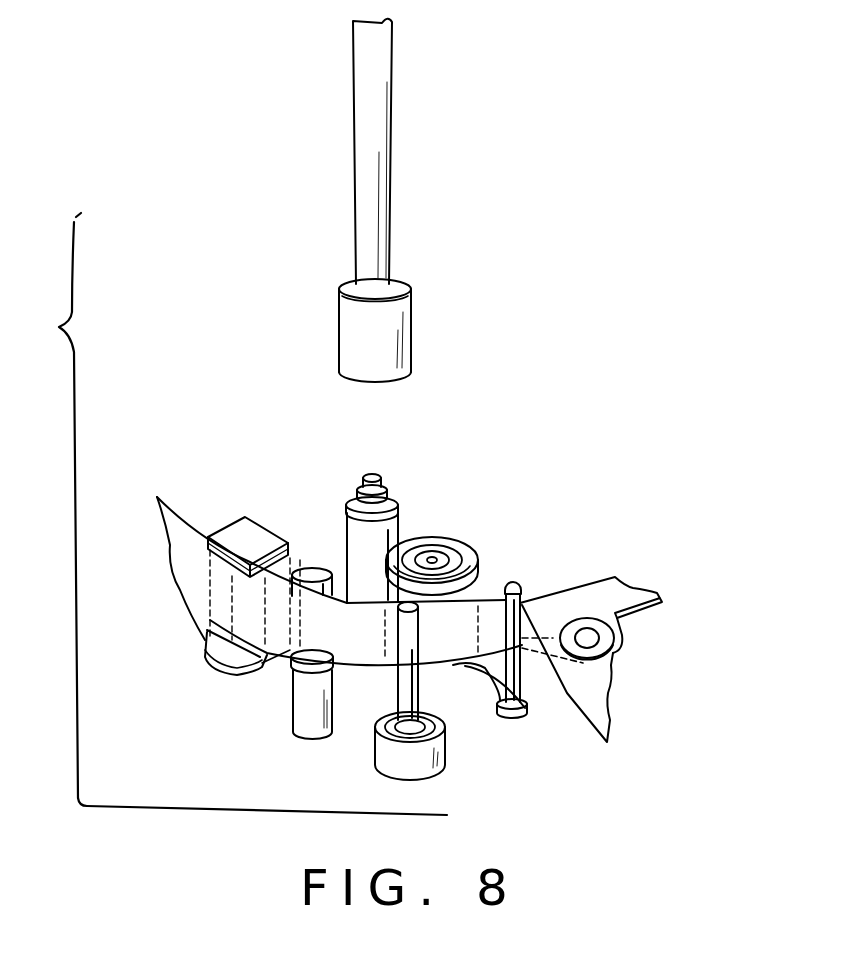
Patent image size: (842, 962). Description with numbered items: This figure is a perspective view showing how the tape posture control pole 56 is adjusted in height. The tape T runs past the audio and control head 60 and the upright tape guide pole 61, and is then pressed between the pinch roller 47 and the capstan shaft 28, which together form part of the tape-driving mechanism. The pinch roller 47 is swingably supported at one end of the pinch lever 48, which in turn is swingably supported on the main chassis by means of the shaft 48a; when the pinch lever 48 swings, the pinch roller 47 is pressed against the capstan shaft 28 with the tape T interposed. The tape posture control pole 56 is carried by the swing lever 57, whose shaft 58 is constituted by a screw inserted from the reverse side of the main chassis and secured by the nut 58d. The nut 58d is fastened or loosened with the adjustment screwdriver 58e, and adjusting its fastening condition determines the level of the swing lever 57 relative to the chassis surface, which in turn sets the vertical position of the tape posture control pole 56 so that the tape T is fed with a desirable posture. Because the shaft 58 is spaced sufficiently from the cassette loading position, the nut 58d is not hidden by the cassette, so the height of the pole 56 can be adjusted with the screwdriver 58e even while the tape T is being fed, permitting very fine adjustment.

The tape T is at (178, 522).
The audio and control head 60 is at (242, 515).
The tape guide pole 61 is at (312, 555).
The shaft 58 is at (422, 497).
The nut 58d is at (391, 490).
The adjustment screwdriver 58e is at (410, 322).
The pinch roller 47 is at (483, 550).
The capstan shaft 28 is at (385, 690).
The tape posture control pole 56 is at (526, 582).
The swing lever 57 is at (497, 685).
The pinch lever 48 is at (662, 612).
The shaft 48a is at (614, 646).